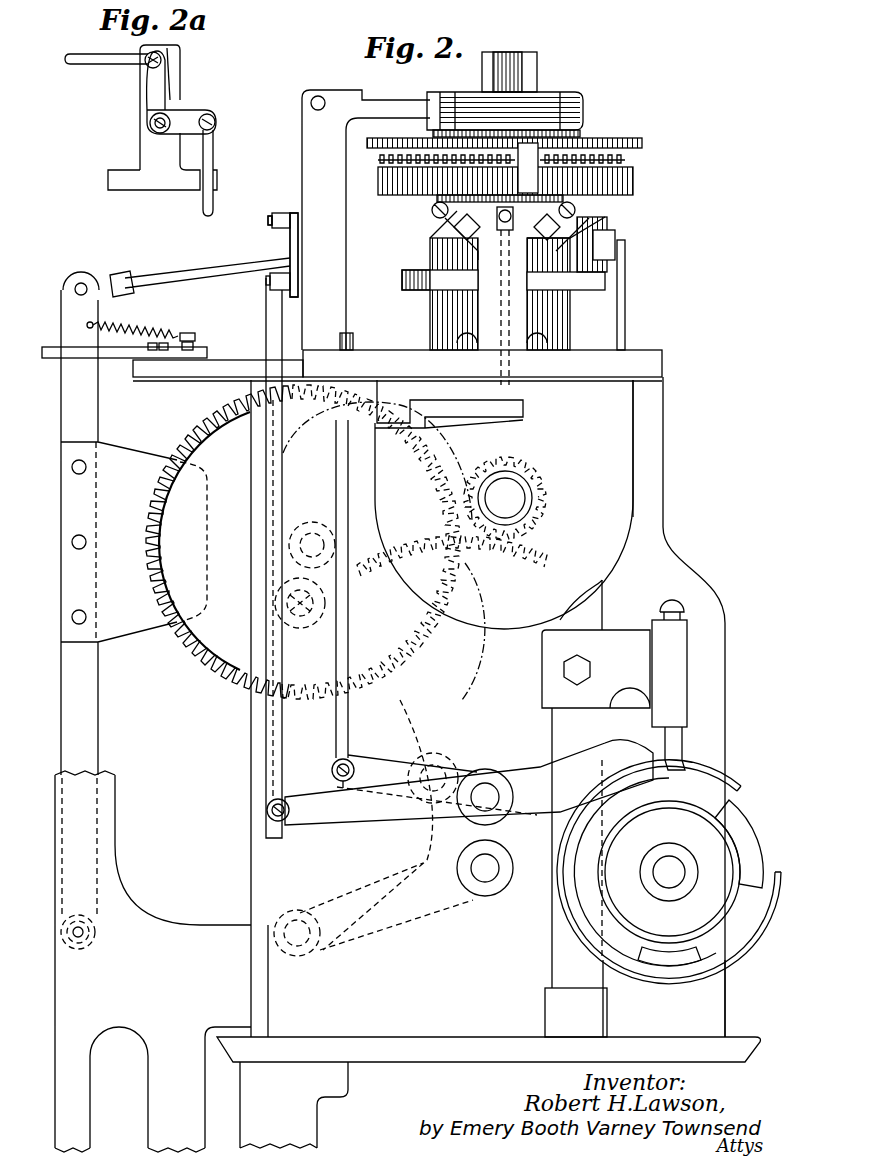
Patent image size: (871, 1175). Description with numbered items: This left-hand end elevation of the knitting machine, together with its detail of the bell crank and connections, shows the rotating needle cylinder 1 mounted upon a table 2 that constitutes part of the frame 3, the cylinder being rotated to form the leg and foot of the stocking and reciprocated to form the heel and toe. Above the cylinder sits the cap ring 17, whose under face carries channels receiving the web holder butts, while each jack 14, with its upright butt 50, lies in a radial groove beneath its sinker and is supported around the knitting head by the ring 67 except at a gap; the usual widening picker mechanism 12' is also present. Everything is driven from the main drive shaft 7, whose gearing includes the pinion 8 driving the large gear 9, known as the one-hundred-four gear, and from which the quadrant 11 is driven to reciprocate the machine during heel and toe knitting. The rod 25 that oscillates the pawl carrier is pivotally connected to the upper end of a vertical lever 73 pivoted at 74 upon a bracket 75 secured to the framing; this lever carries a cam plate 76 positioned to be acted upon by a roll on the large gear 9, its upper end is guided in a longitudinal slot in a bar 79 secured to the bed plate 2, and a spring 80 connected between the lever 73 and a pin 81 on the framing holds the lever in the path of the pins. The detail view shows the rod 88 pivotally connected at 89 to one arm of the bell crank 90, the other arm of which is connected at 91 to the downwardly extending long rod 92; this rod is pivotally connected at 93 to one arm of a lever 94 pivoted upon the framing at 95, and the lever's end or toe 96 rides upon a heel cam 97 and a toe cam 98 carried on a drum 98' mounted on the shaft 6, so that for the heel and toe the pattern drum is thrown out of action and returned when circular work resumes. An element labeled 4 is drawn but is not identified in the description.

In FIG. 2, the needle cylinder 1 is at (562, 318).
In FIG. 2, the table 2 is at (650, 369).
In FIG. 2, the frame 3 is at (648, 427).
In FIG. 2, the motor 4 is at (470, 96).
In FIG. 2, the shaft 6 is at (668, 863).
In FIG. 2, the main drive shaft 7 is at (512, 497).
In FIG. 2, the pinion 8 is at (504, 457).
In FIG. 2, the large gear 9 is at (218, 416).
In FIG. 2, the quadrant 11 is at (523, 555).
In FIG. 2, the widening picker mechanism 12' is at (517, 235).
In FIG. 2, the jack 14 is at (625, 162).
In FIG. 2, the cap ring 17 is at (622, 143).
In FIG. 2, the rod 25 is at (185, 272).
In FIG. 2, the upright butt 50 is at (430, 150).
In FIG. 2, the ring 67 is at (617, 200).
In FIG. 2, the vertical lever 73 is at (70, 407).
In FIG. 2, the pivot 74 is at (72, 932).
In FIG. 2, the bracket 75 is at (72, 1005).
In FIG. 2, the cam plate 76 is at (76, 290).
In FIG. 2, the bar 79 is at (53, 348).
In FIG. 2, the spring 80 is at (137, 329).
In FIG. 2, the pin 81 is at (186, 331).
In FIG. 2A, the rod 88 is at (95, 64).
In FIG. 2, the rod 88 is at (280, 213).
In FIG. 2A, the pivot connection 89 is at (147, 66).
In FIG. 2, the pivot connection 89 is at (268, 224).
In FIG. 2A, the bell crank 90 is at (157, 98).
In FIG. 2, the bell crank 90 is at (290, 244).
In FIG. 2A, the pivot connection 91 is at (214, 117).
In FIG. 2, the pivot connection 91 is at (268, 286).
In FIG. 2A, the long rod 92 is at (203, 208).
In FIG. 2, the long rod 92 is at (266, 778).
In FIG. 2, the pivot connection 93 is at (267, 817).
In FIG. 2, the lever 94 is at (386, 820).
In FIG. 2, the pivot 95 is at (487, 790).
In FIG. 2, the toe 96 is at (663, 796).
In FIG. 2, the heel cam 97 is at (747, 832).
In FIG. 2, the toe cam 98 is at (645, 894).
In FIG. 2, the drum 98' is at (746, 888).